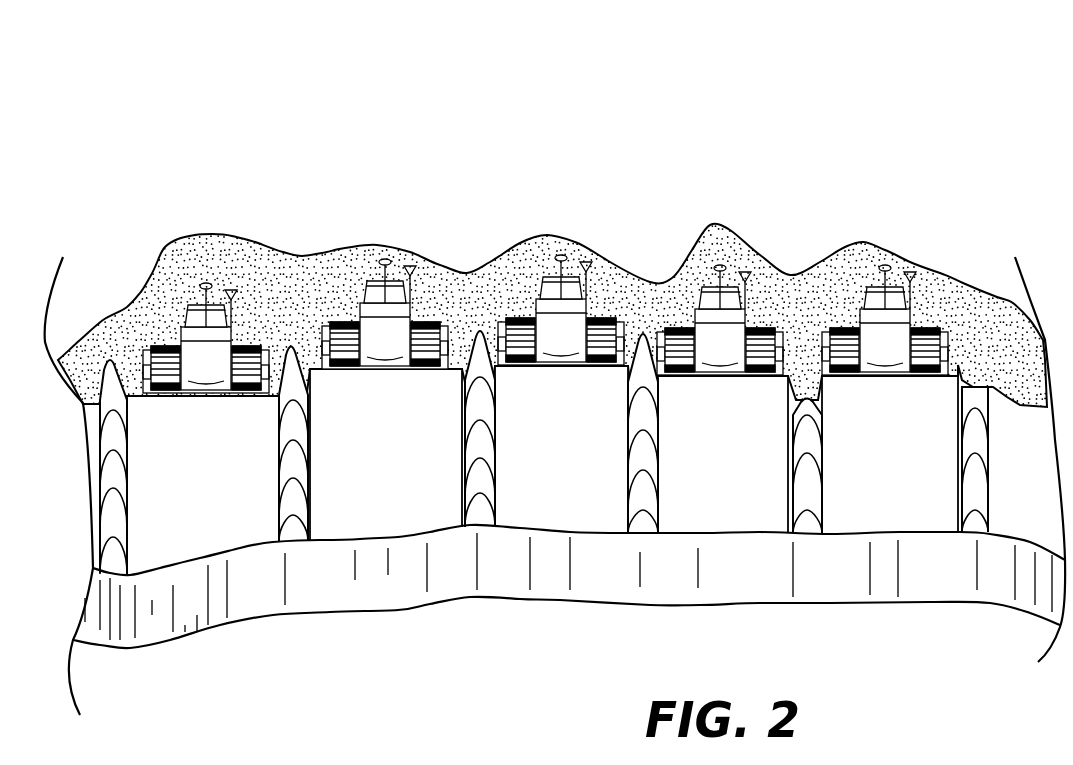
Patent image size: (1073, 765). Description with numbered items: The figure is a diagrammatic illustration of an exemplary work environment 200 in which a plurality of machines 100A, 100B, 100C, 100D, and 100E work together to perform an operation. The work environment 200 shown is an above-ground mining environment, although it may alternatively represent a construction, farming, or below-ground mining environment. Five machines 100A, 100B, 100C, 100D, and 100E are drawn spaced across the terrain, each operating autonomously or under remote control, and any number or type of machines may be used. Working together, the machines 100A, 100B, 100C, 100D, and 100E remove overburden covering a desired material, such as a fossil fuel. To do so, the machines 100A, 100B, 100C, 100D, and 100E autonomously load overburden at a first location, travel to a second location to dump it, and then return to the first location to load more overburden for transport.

The work environment 200 is at (166, 98).
The machine 100A is at (205, 378).
The machine 100B is at (382, 360).
The machine 100C is at (560, 353).
The machine 100D is at (717, 358).
The machine 100E is at (880, 363).